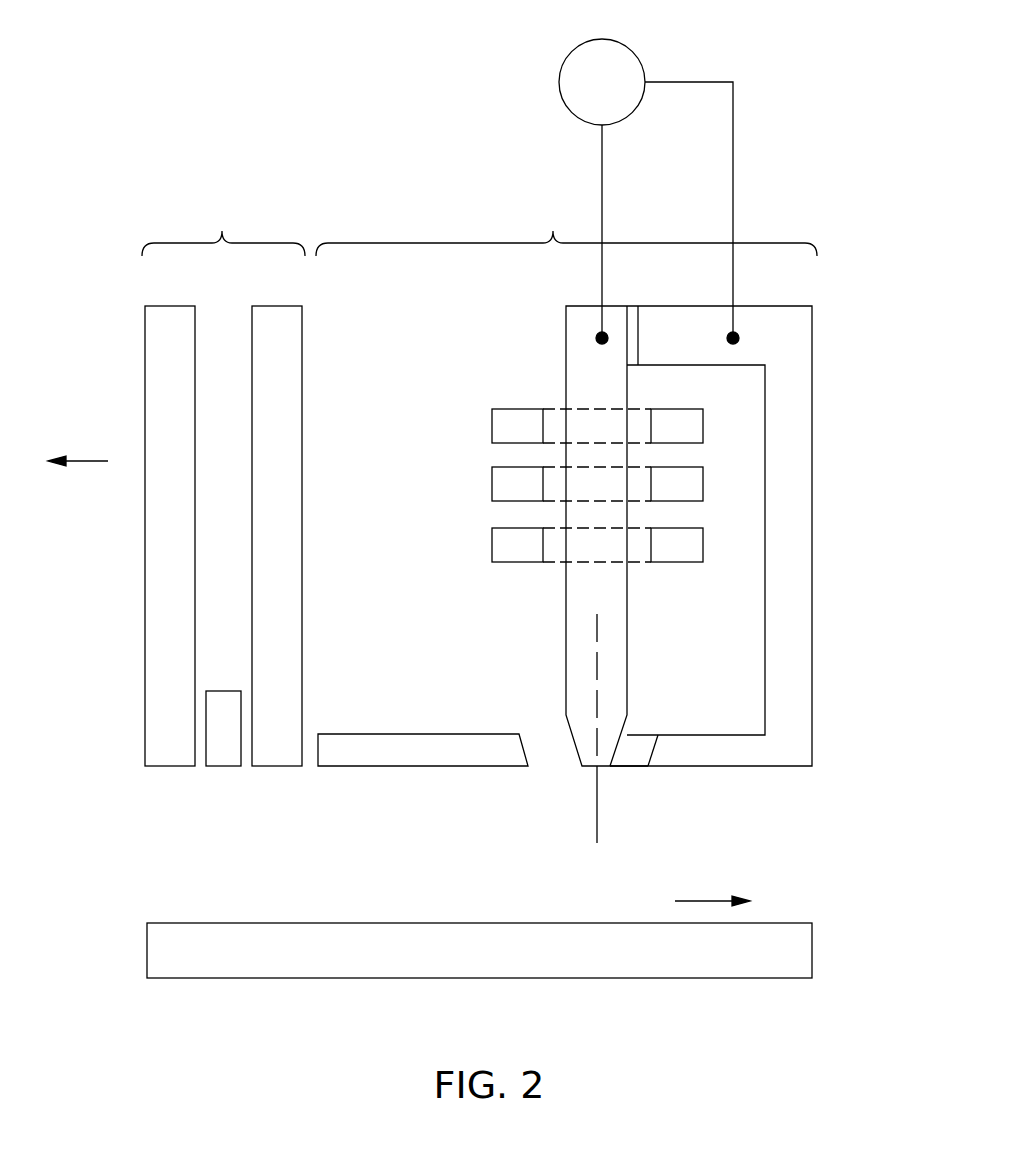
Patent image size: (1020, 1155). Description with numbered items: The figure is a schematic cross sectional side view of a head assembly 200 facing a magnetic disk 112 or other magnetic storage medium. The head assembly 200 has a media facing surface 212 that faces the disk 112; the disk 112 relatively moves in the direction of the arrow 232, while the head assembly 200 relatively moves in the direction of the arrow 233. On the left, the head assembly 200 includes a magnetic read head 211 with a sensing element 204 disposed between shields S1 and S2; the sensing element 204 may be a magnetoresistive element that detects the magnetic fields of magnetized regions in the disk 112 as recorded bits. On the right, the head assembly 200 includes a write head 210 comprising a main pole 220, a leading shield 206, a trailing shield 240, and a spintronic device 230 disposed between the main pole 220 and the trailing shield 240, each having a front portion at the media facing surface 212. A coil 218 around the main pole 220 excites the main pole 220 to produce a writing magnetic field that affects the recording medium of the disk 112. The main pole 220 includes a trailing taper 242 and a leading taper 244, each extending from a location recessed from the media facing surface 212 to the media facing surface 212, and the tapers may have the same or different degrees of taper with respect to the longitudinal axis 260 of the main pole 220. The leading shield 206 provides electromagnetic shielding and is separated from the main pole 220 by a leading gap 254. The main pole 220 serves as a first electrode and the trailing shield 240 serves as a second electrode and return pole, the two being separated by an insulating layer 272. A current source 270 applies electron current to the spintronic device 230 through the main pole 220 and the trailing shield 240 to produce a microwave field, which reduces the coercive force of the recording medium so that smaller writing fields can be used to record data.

The head assembly 200 is at (183, 110).
The magnetic read head 211 is at (223, 225).
The write head 210 is at (566, 225).
The shield S1 is at (166, 752).
The shield S2 is at (277, 752).
The sensing element 204 is at (222, 752).
The leading shield 206 is at (365, 767).
The trailing shield 240 is at (777, 752).
The main pole 220 is at (612, 597).
The insulating layer 272 is at (640, 336).
The media facing surface 212 is at (710, 767).
The spintronic device 230 is at (630, 747).
The trailing taper 242 is at (625, 717).
The leading taper 244 is at (566, 722).
The leading gap 254 is at (549, 765).
The longitudinal axis 260 is at (597, 835).
The coil 218 is at (510, 562).
The current source 270 is at (630, 44).
The arrow 233 is at (90, 461).
The arrow 232 is at (700, 898).
The magnetic disk 112 is at (812, 948).